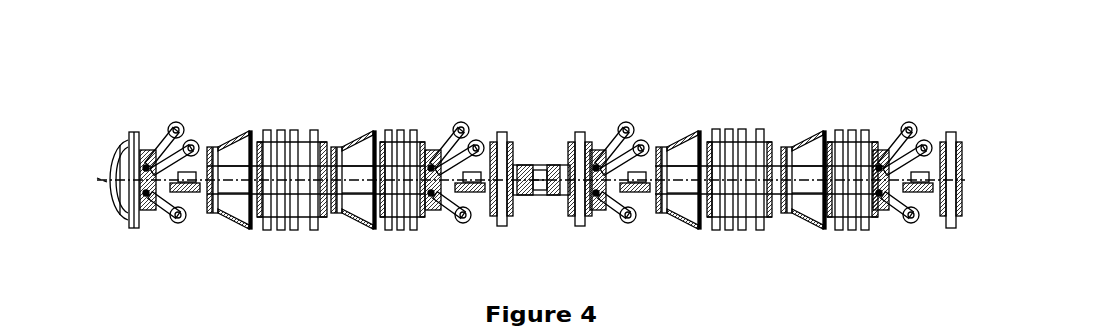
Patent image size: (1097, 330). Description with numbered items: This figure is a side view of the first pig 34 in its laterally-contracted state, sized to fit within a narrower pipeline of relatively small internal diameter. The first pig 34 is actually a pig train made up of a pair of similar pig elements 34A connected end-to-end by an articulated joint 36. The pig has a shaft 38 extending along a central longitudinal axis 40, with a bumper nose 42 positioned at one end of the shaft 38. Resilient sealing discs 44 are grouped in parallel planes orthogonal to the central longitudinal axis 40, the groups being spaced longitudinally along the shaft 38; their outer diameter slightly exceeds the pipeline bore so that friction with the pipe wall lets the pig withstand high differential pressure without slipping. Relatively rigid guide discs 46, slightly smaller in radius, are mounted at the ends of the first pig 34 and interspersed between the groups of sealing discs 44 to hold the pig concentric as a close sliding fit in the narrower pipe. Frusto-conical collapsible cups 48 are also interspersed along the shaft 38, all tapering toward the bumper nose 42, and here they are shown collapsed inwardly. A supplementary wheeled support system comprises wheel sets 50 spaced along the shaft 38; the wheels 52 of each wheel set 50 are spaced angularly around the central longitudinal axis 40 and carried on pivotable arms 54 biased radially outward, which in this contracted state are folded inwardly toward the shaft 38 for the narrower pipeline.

The first pig 34 is at (782, 62).
The pig element 34A is at (322, 146).
The articulated joint 36 is at (538, 173).
The shaft 38 is at (682, 172).
The central longitudinal axis 40 is at (105, 178).
The bumper nose 42 is at (112, 170).
The sealing disc 44 is at (277, 232).
The guide disc 46 is at (132, 135).
The frusto-conical collapsible cup 48 is at (365, 207).
The wheel set 50 is at (147, 192).
The wheel 52 is at (183, 126).
The pivotable arm 54 is at (445, 142).